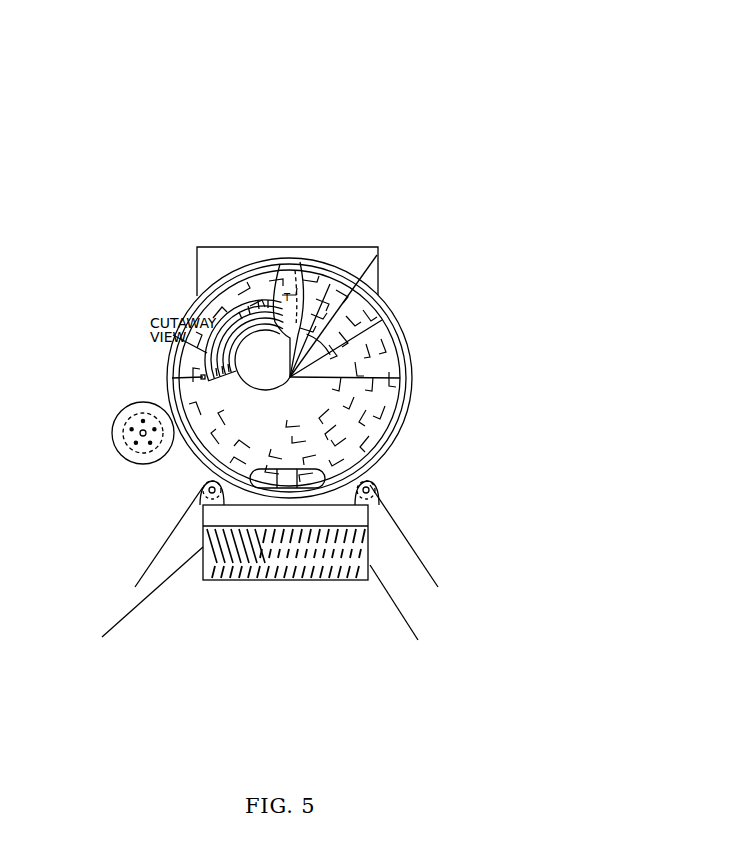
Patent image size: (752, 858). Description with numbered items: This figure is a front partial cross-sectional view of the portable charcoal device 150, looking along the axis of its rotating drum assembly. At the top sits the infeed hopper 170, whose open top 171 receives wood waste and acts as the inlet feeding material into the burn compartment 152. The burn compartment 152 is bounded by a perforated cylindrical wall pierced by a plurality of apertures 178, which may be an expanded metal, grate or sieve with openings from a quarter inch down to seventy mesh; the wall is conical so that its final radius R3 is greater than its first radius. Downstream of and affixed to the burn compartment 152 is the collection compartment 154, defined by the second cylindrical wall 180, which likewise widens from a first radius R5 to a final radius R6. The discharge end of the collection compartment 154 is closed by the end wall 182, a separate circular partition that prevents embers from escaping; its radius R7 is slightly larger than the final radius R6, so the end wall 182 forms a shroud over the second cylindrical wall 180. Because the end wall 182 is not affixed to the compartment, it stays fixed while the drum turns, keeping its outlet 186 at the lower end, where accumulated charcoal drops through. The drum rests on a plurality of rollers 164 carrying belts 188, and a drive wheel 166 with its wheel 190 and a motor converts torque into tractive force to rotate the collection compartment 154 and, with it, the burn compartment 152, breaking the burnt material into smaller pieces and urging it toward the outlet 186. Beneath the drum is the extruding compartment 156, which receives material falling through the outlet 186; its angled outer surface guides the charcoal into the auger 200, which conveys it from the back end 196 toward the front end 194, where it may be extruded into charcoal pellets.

The portable charcoal device 150 is at (548, 80).
The burn compartment 152 is at (203, 367).
The collection compartment 154 is at (187, 298).
The extruding compartment 156 is at (199, 582).
The rollers 164 is at (199, 493).
The drive wheel 166 is at (120, 415).
The infeed hopper 170 is at (378, 257).
The open top 171 is at (348, 242).
The apertures 178 is at (262, 312).
The second cylindrical wall 180 is at (410, 352).
The end wall 182 is at (292, 379).
The outlet 186 is at (333, 465).
The belts 188 is at (152, 558).
The wheel 190 is at (118, 448).
The front end 194 is at (413, 619).
The back end 196 is at (140, 608).
The auger 200 is at (278, 530).
The final radius R3 is at (295, 270).
The first radius R5 is at (377, 255).
The final radius R6 is at (398, 328).
The radius R7 is at (408, 391).